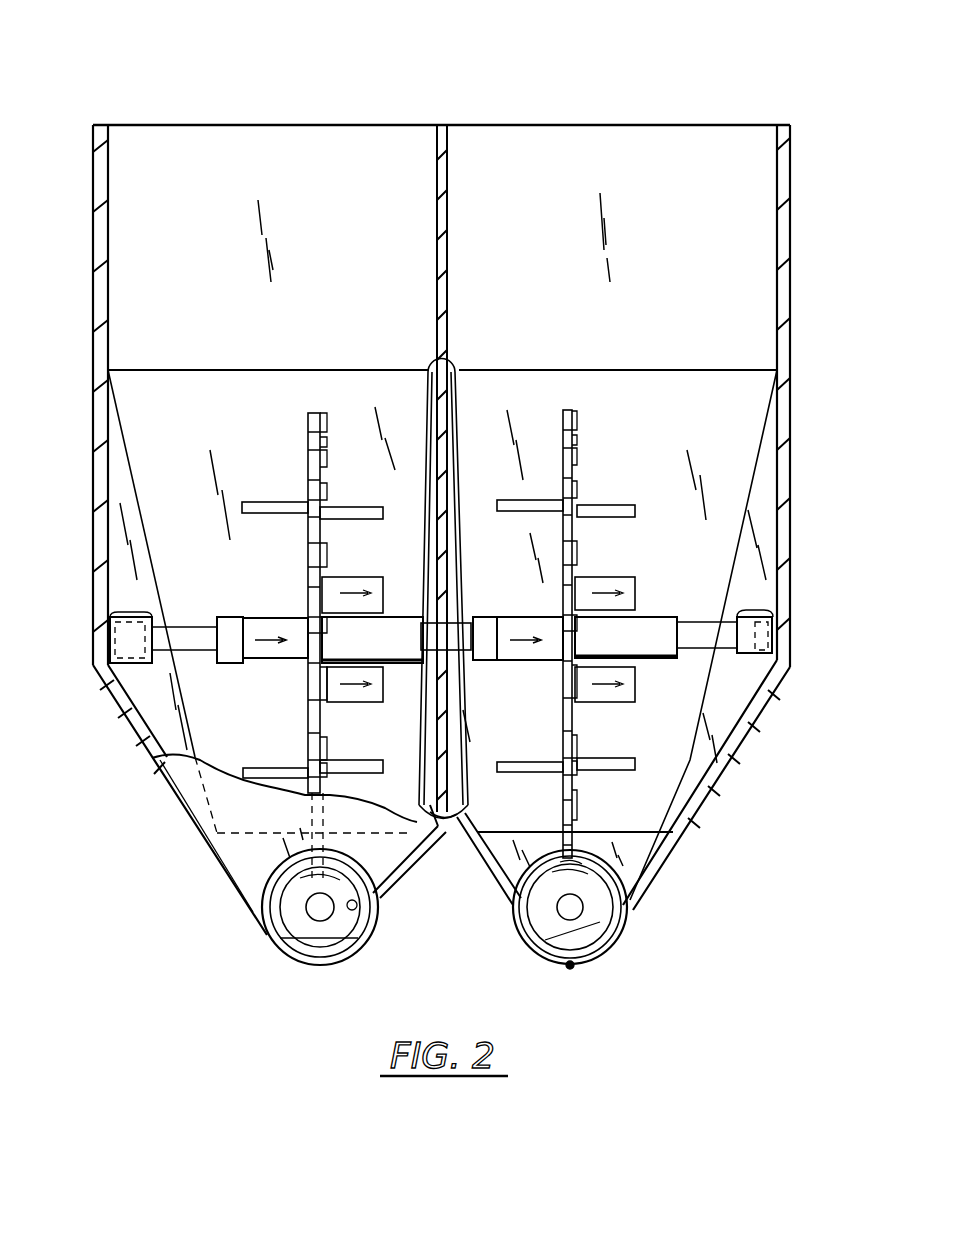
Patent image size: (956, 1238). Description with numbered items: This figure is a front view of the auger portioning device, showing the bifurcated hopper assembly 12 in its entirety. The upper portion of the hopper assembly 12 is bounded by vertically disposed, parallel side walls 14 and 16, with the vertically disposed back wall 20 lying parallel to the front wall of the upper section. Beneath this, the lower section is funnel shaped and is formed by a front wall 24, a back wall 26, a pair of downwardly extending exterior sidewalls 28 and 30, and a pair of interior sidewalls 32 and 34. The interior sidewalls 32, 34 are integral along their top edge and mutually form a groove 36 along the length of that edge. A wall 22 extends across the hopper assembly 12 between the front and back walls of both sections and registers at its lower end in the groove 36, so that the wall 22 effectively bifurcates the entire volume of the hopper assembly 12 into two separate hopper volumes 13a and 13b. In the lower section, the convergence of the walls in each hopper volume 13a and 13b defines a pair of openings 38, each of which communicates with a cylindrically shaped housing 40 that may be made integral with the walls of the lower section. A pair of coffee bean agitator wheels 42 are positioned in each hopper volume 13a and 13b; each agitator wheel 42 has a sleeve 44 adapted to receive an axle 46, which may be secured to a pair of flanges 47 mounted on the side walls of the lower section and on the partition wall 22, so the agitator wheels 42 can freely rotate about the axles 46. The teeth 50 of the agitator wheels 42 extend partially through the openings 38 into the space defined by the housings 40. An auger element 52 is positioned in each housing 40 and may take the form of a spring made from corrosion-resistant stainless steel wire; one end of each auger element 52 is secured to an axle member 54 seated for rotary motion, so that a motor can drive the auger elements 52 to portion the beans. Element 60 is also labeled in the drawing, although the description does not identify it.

The bifurcated hopper assembly 12 is at (846, 150).
The hopper volume 13a is at (240, 438).
The hopper volume 13b is at (712, 430).
The side wall 14 is at (93, 352).
The side wall 16 is at (790, 325).
The back wall 20 is at (602, 195).
The wall 22 is at (448, 245).
The front wall 24 is at (277, 823).
The back wall 26 is at (697, 487).
The exterior sidewall 28 is at (185, 813).
The exterior sidewall 30 is at (727, 775).
The interior sidewall 32 is at (378, 896).
The interior sidewall 34 is at (488, 872).
The groove 36 is at (454, 793).
The opening 38 is at (569, 970).
The cylindrically shaped housing 40 is at (353, 950).
The coffee bean agitator wheel 42 is at (304, 412).
The sleeve 44 is at (233, 620).
The axle 46 is at (181, 627).
The flange 47 is at (759, 612).
The teeth 50 is at (318, 413).
The auger element 52 is at (352, 922).
The axle member 54 is at (272, 936).
The trough side wall 60 is at (250, 914).